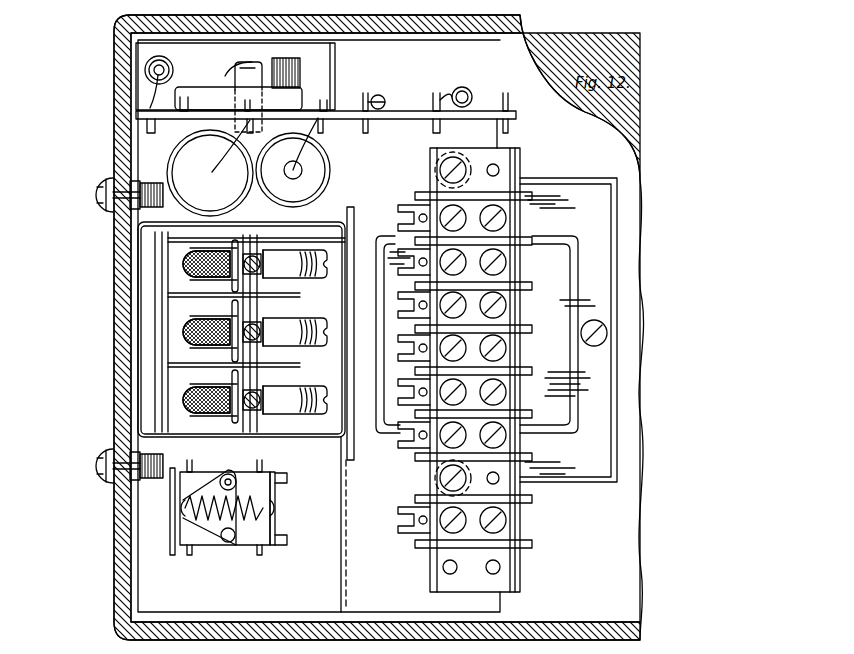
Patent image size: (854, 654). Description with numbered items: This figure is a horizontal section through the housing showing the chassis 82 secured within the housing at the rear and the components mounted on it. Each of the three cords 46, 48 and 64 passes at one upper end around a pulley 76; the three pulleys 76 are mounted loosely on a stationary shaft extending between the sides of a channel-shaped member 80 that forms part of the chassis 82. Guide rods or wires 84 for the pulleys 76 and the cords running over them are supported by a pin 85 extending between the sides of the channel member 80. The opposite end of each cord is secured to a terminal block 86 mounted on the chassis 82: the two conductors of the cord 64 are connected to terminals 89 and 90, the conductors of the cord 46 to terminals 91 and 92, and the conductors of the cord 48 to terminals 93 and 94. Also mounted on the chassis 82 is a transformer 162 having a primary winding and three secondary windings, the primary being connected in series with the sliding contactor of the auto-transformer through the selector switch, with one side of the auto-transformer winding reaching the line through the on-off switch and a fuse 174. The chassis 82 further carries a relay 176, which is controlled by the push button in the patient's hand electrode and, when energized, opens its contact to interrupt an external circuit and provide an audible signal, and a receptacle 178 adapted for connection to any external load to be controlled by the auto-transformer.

The fuse 174 is at (147, 69).
The receptacle 178 is at (226, 76).
The channel-shaped member 80 is at (333, 222).
The pulley 76 is at (292, 250).
The guide rods or wires 84 is at (239, 310).
The cord 48 is at (183, 264).
The pin 85 is at (152, 322).
The cord 64 is at (185, 332).
The cord 46 is at (185, 398).
The terminal 94 is at (400, 212).
The terminal 93 is at (402, 262).
The terminal 90 is at (400, 305).
The terminal 89 is at (400, 360).
The terminal 92 is at (400, 405).
The terminal 91 is at (400, 440).
The terminal block 86 is at (430, 482).
The transformer 162 is at (565, 190).
The relay 176 is at (241, 548).
The chassis 82 is at (362, 593).